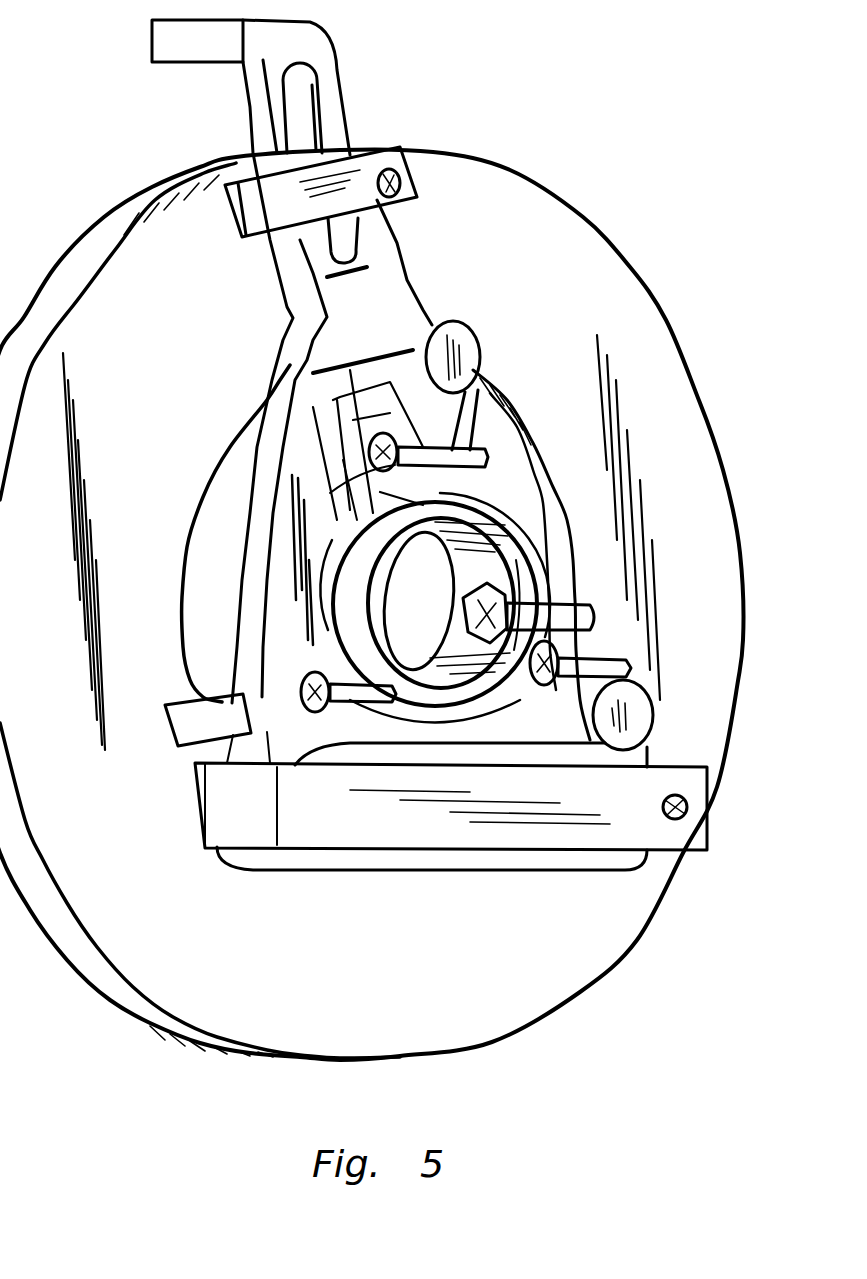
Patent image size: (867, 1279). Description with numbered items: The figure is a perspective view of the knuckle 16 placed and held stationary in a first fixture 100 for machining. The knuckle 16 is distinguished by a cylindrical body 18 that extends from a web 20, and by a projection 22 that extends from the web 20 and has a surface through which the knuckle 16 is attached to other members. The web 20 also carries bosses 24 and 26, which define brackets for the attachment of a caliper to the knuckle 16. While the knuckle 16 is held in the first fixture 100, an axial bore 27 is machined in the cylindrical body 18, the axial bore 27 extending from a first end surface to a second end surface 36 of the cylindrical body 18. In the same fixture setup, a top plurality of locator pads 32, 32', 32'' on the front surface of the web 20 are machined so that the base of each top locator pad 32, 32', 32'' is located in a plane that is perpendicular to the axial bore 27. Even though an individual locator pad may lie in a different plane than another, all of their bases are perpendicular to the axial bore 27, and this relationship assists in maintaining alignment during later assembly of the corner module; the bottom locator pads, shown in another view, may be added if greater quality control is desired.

The first fixture 100 is at (602, 211).
The projection 22 is at (167, 47).
The knuckle 16 is at (243, 354).
The boss 24 is at (455, 330).
The top locator pad 32 is at (315, 452).
The cylindrical body 18 is at (425, 503).
The second end surface 36 is at (377, 577).
The axial bore 27 is at (500, 563).
The web 20 is at (292, 646).
The top locator pad 32' is at (257, 691).
The top locator pad 32'' is at (542, 791).
The boss 26 is at (642, 690).